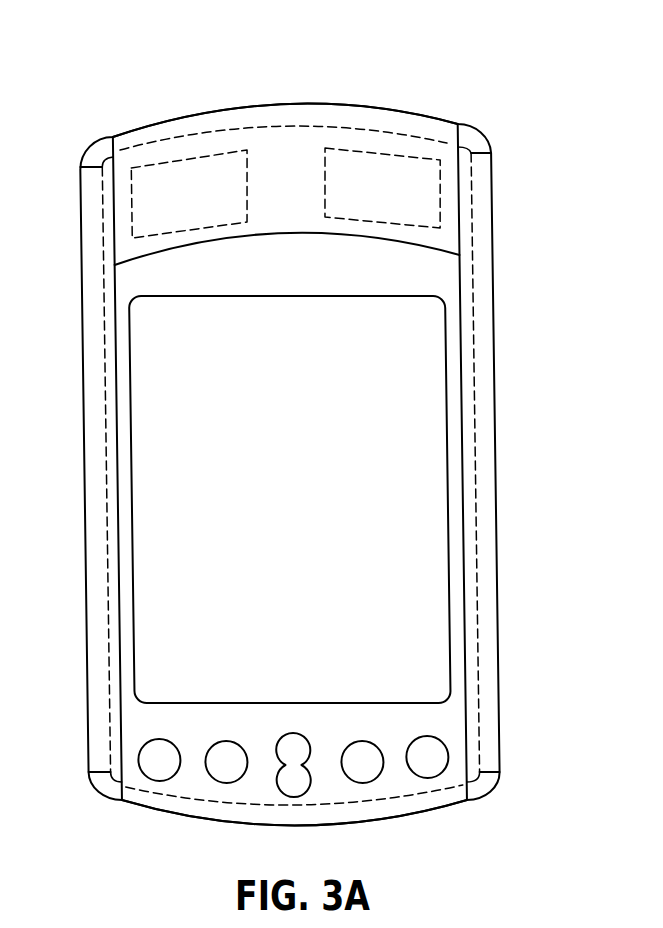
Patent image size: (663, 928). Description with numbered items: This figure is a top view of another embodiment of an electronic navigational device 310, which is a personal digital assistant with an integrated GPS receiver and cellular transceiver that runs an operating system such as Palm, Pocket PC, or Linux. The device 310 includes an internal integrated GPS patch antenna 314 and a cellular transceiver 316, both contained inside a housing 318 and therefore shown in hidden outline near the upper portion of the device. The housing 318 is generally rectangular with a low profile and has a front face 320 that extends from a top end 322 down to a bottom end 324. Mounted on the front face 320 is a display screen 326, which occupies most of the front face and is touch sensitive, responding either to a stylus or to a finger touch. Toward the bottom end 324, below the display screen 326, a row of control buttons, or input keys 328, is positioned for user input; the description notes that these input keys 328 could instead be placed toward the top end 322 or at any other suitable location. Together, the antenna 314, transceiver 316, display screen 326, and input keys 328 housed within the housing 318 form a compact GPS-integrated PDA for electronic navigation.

The electronic navigational device 310 is at (493, 70).
The internal integrated GPS patch antenna 314 is at (188, 167).
The cellular transceiver 316 is at (375, 173).
The housing 318 is at (82, 265).
The front face 320 is at (128, 293).
The top end 322 is at (301, 106).
The bottom end 324 is at (389, 818).
The display screen 326 is at (405, 518).
The input keys 328 is at (154, 794).